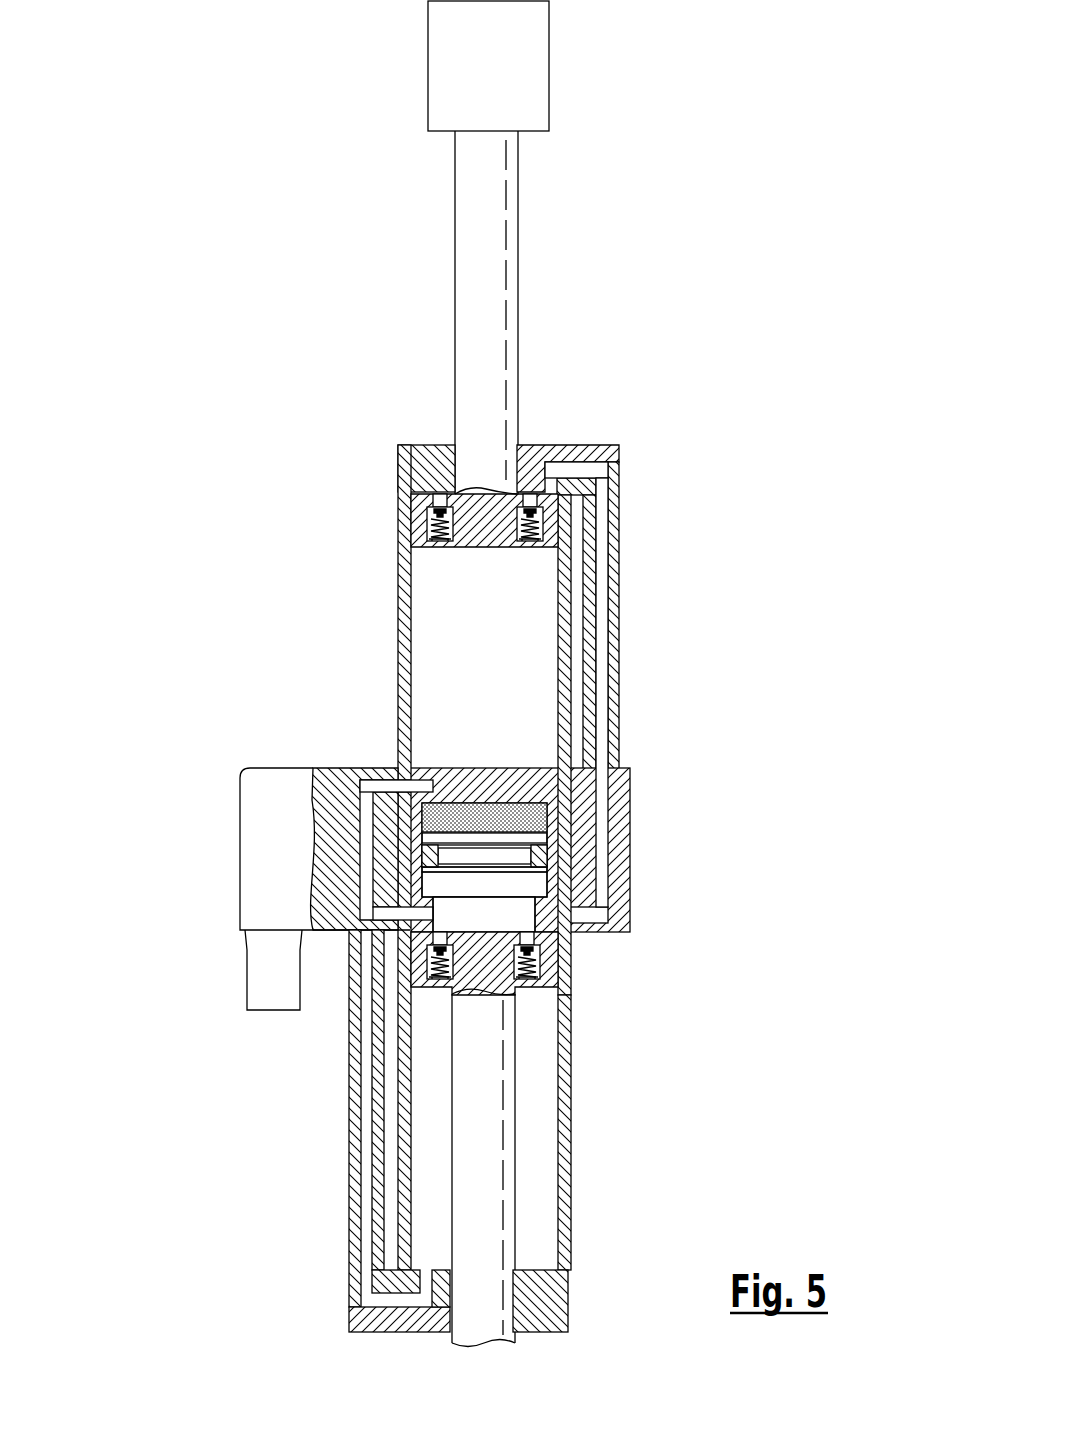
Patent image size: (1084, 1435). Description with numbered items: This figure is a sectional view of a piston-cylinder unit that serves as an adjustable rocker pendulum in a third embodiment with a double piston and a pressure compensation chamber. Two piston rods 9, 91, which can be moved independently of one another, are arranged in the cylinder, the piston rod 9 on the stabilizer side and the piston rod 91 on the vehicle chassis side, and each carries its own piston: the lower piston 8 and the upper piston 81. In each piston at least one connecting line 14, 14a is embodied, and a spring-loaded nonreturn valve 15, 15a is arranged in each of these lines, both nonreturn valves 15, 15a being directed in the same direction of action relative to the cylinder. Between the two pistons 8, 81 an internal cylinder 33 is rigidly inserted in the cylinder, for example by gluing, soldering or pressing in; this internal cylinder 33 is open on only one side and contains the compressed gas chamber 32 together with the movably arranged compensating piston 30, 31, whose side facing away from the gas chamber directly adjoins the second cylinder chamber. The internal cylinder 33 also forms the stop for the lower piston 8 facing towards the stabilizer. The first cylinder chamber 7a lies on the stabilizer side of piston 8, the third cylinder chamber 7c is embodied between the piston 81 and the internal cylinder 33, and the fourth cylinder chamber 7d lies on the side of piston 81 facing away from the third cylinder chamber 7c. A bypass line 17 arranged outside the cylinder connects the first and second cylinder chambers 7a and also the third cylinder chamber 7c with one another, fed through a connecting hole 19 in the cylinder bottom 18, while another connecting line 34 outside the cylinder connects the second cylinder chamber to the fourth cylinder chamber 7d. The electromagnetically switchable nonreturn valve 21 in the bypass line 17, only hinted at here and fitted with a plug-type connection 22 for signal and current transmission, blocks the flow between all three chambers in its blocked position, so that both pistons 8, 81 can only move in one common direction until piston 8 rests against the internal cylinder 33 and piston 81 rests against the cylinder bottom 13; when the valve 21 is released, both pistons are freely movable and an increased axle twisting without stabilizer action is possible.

The piston rod 91 is at (522, 232).
The fourth cylinder chamber 7d is at (419, 486).
The cylinder bottom 13 is at (527, 445).
The connecting line 14a is at (437, 502).
The nonreturn valve 15a is at (438, 552).
The piston 81 is at (547, 503).
The connecting line 34 is at (609, 627).
The third cylinder chamber 7c is at (425, 721).
The internal cylinder 33 is at (525, 785).
The compressed gas chamber 32 is at (530, 817).
The compensating piston 31 is at (543, 853).
The compensating piston 30 is at (507, 858).
The electromagnetically switchable nonreturn valve 21 is at (348, 913).
The plug-type connection 22 is at (260, 993).
The connecting line 14 is at (530, 937).
The nonreturn valve 15 is at (532, 997).
The piston 8 is at (483, 972).
The piston rod 9 is at (522, 1128).
The bypass line 17 is at (365, 1168).
The first cylinder chamber 7a is at (543, 1193).
The connecting hole 19 is at (425, 1300).
The cylinder bottom 18 is at (525, 1305).